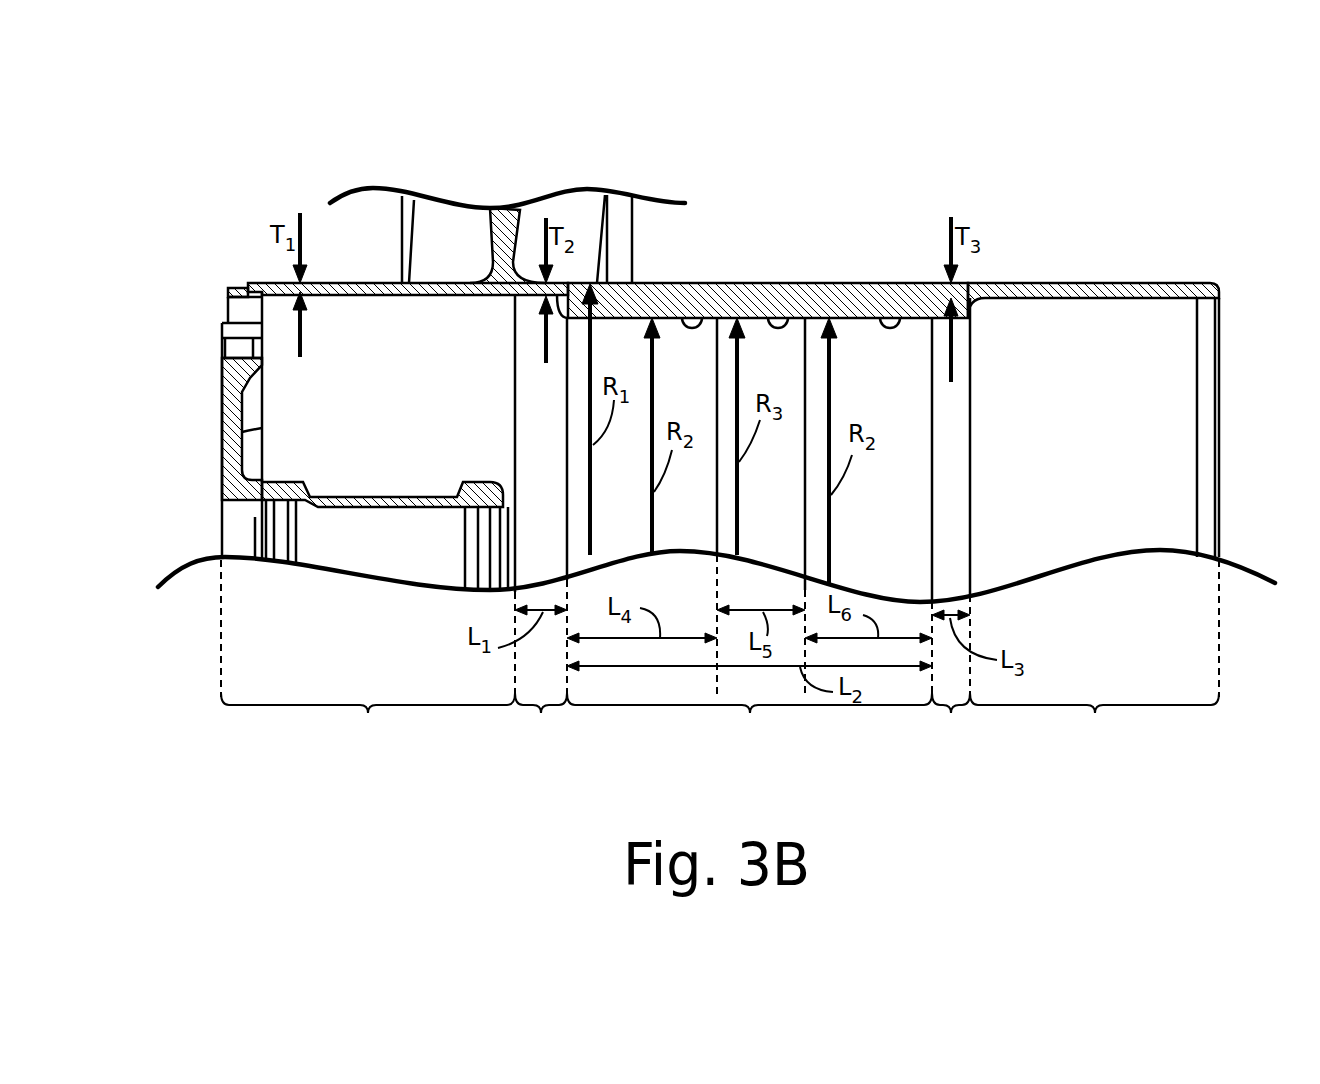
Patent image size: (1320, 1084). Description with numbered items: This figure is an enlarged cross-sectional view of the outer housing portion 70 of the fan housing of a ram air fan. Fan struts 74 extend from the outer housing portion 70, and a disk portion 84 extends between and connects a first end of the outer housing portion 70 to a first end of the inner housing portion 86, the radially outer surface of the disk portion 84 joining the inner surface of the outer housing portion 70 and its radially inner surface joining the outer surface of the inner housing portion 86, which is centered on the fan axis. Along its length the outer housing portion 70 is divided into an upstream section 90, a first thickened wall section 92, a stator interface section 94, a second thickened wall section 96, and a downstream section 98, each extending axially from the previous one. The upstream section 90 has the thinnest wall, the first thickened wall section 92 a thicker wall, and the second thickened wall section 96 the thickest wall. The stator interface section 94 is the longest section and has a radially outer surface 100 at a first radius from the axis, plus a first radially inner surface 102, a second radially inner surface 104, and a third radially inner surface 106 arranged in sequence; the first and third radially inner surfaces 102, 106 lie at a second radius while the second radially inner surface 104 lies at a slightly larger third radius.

The outer housing portion 70 is at (733, 366).
The fan struts 74 is at (502, 207).
The disk portion 84 is at (233, 375).
The inner housing portion 86 is at (373, 500).
The upstream section 90 is at (368, 654).
The first thickened wall section 92 is at (541, 661).
The stator interface section 94 is at (749, 653).
The second thickened wall section 96 is at (951, 667).
The downstream section 98 is at (1094, 655).
The radially outer surface 100 is at (855, 283).
The first radially inner surface 102 is at (698, 316).
The second radially inner surface 104 is at (791, 326).
The third radially inner surface 106 is at (905, 317).